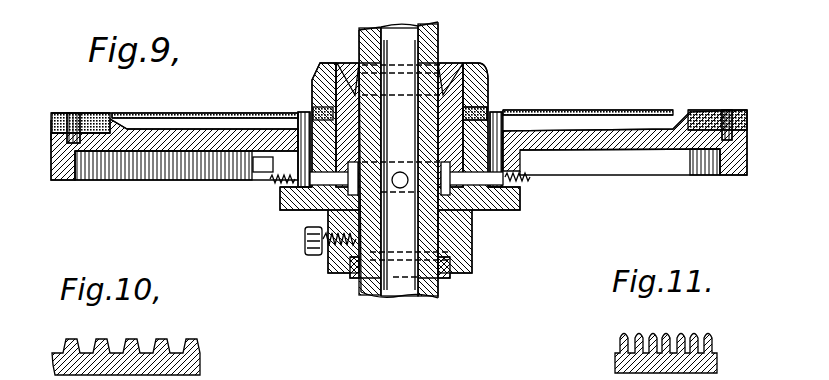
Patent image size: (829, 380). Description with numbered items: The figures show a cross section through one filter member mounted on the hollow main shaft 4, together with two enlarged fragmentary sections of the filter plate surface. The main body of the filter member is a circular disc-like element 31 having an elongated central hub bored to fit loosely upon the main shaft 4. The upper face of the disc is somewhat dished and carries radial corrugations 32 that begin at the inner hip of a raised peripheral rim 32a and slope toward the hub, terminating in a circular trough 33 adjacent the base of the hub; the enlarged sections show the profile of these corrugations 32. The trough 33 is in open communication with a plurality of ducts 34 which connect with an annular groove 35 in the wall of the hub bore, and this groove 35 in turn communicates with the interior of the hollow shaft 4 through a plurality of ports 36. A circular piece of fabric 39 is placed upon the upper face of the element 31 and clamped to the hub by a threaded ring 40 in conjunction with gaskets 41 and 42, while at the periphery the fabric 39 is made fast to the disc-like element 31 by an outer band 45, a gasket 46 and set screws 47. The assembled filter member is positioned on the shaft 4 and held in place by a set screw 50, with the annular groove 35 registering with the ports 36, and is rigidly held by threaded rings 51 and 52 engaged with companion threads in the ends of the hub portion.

In FIG. 9, the main shaft 4 is at (432, 42).
In FIG. 9, the circular disc-like element 31 is at (58, 180).
In FIG. 9, the radial corrugations 32 is at (602, 122).
In FIG. 10, the radial corrugations 32 is at (146, 347).
In FIG. 11, the radial corrugations 32 is at (662, 338).
In FIG. 9, the raised peripheral rim 32a is at (120, 115).
In FIG. 9, the circular trough 33 is at (301, 112).
In FIG. 9, the ducts 34 is at (318, 182).
In FIG. 9, the annular groove 35 is at (462, 196).
In FIG. 9, the ports 36 is at (402, 188).
In FIG. 9, the fabric 39 is at (205, 113).
In FIG. 9, the threaded ring 40 is at (487, 72).
In FIG. 9, the gasket 41 is at (488, 104).
In FIG. 9, the gasket 42 is at (492, 112).
In FIG. 9, the outer band 45 is at (57, 113).
In FIG. 9, the gasket 46 is at (55, 129).
In FIG. 9, the set screws 47 is at (83, 113).
In FIG. 9, the set screw 50 is at (313, 256).
In FIG. 9, the threaded ring 51 is at (352, 88).
In FIG. 9, the threaded ring 52 is at (358, 280).